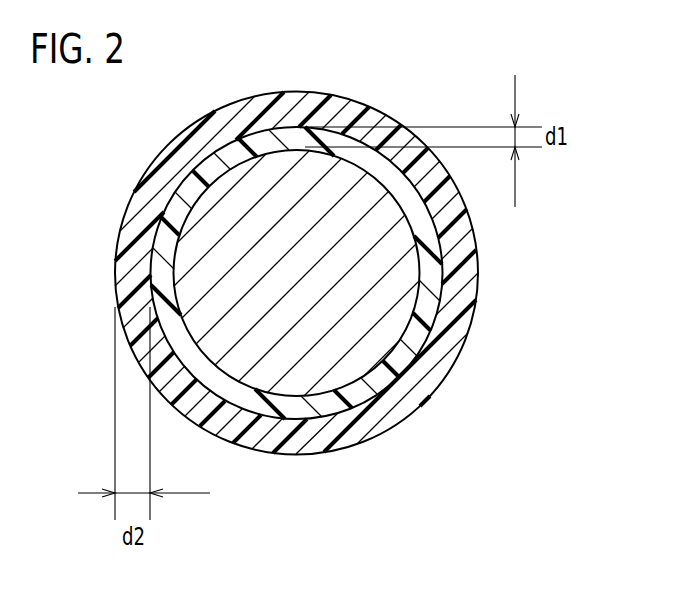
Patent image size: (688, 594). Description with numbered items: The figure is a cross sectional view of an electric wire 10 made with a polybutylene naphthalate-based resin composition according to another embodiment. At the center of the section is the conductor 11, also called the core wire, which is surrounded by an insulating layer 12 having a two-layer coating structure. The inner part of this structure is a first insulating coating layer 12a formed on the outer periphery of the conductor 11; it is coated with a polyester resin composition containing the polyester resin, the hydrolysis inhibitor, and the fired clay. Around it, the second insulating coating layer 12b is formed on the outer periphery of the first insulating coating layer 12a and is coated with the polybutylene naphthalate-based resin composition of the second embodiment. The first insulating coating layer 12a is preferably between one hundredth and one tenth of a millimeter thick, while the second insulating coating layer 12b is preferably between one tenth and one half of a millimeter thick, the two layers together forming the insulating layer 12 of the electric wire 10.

The electric wire 10 is at (343, 310).
The conductor 11 is at (330, 348).
The insulating layer 12 is at (380, 273).
The first insulating coating layer 12a is at (433, 268).
The second insulating coating layer 12b is at (457, 307).